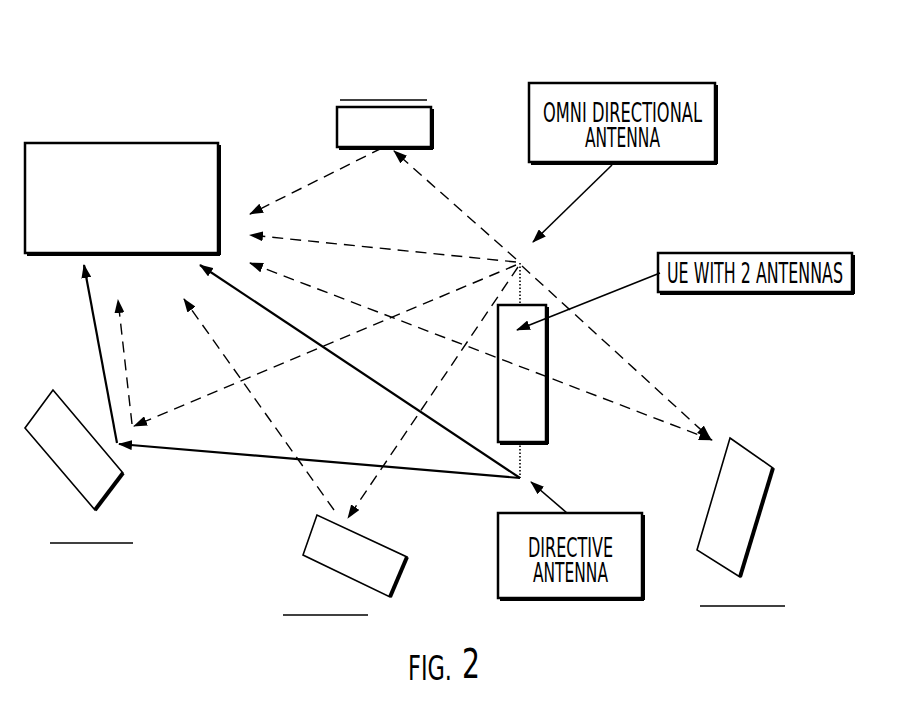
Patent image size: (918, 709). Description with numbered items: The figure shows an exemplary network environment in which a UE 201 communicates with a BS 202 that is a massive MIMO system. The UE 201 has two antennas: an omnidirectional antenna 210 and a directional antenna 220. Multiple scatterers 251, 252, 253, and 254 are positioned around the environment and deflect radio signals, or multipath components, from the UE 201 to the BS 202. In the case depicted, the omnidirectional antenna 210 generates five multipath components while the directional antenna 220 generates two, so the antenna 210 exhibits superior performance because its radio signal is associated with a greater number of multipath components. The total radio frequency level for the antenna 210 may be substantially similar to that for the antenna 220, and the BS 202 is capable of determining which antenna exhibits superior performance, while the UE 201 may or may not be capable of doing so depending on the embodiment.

The BS 202 is at (137, 220).
The scatterer 251 is at (398, 141).
The UE 201 is at (537, 387).
The omnidirectional antenna 210 is at (523, 290).
The directional antenna 220 is at (522, 466).
The scatterer 254 is at (93, 464).
The scatterer 253 is at (368, 566).
The scatterer 252 is at (753, 517).